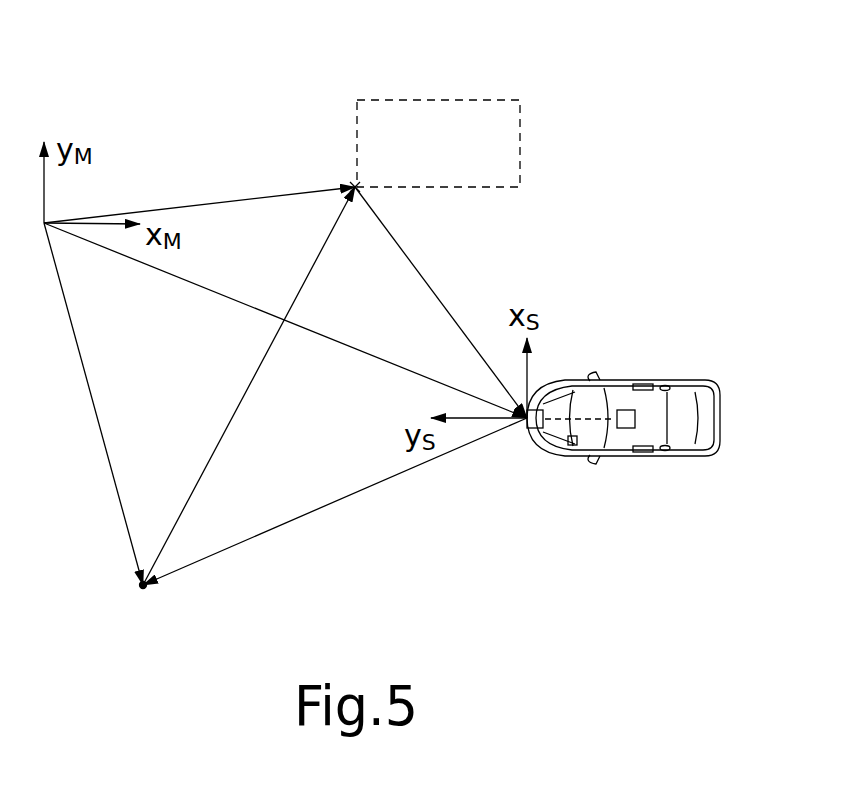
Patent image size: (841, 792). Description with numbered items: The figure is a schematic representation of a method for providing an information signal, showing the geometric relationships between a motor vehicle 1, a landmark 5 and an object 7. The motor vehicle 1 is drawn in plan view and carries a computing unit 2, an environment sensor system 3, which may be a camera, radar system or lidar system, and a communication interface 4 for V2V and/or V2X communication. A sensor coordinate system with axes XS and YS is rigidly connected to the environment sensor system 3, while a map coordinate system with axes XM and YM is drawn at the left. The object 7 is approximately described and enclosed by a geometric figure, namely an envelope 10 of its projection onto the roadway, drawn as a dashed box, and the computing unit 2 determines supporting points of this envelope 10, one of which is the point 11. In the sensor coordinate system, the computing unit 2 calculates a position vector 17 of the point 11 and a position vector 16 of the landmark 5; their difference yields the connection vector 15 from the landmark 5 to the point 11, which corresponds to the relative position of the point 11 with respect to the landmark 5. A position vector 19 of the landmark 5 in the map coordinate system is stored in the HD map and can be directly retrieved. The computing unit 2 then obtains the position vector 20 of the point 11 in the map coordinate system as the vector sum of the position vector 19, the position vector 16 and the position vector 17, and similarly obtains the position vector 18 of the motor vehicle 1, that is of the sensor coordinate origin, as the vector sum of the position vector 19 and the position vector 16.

The motor vehicle 1 is at (672, 362).
The computing unit 2 is at (626, 409).
The environment sensor system 3 is at (541, 406).
The communication interface 4 is at (572, 446).
The landmark 5 is at (136, 609).
The object 7 is at (454, 107).
The envelope 10 is at (488, 100).
The supporting point 11 is at (360, 184).
The connection vector 15 is at (256, 382).
The position vector of the landmark 16 is at (370, 489).
The position vector of the point 17 is at (430, 282).
The position vector of the motor vehicle 18 is at (352, 345).
The position vector of the landmark in the map coordinate system 19 is at (90, 396).
The position vector of the point in the map coordinate system 20 is at (237, 199).